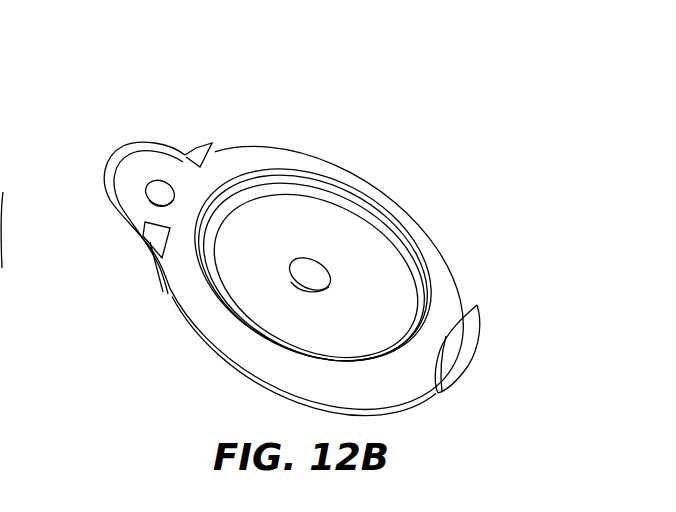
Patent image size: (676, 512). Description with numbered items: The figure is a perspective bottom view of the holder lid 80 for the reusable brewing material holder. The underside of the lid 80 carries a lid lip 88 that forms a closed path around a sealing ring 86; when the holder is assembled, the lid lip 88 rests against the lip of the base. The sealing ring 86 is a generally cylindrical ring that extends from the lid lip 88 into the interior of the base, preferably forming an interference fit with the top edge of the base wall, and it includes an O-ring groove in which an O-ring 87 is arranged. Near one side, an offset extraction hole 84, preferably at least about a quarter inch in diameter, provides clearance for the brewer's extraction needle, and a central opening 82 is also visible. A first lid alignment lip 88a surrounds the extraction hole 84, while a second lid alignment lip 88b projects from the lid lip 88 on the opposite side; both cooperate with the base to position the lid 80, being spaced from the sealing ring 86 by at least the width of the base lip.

The holder lid 80 is at (290, 250).
The central aperture 82 is at (297, 266).
The extraction hole 84 is at (115, 218).
The sealing ring 86 is at (207, 275).
The O-ring 87 is at (250, 337).
The lid lip 88 is at (412, 226).
The first lid alignment lip 88a is at (193, 150).
The second lid alignment lip 88b is at (472, 373).